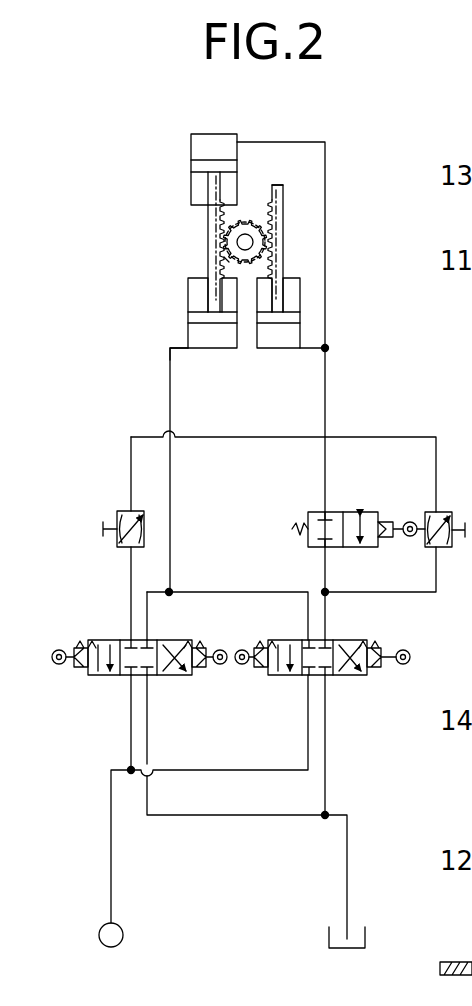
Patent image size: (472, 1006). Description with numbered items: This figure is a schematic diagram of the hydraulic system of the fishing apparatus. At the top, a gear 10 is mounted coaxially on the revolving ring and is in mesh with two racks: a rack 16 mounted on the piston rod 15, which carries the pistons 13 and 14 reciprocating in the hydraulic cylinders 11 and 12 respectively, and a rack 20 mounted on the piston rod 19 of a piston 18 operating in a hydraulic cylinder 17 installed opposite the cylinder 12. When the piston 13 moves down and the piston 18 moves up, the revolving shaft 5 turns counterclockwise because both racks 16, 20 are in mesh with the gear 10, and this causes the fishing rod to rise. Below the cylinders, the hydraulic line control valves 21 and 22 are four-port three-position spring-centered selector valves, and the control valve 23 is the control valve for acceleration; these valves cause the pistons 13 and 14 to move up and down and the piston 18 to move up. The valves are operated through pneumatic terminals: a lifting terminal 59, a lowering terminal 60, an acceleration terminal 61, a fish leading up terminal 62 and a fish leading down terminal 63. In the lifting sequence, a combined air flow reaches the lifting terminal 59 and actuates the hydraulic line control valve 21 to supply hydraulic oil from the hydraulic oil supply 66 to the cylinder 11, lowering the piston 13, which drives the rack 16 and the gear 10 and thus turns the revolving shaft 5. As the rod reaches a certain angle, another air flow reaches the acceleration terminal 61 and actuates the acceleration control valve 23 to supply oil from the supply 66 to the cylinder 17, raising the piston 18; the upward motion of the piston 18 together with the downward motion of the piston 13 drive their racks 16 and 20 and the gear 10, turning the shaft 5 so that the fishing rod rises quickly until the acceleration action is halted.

The revolving shaft 5 is at (252, 242).
The gear 10 is at (245, 222).
The hydraulic cylinder 11 is at (191, 145).
The hydraulic cylinder 12 is at (188, 332).
The piston 13 is at (197, 168).
The piston 14 is at (197, 316).
The piston rod 15 is at (208, 216).
The rack 16 is at (226, 262).
The hydraulic cylinder 17 is at (305, 338).
The piston 18 is at (292, 318).
The piston rod 19 is at (284, 268).
The rack 20 is at (272, 190).
The hydraulic line control valve 21 is at (405, 630).
The hydraulic line control valve 22 is at (118, 634).
The control valve for acceleration 23 is at (408, 485).
The lifting terminal 59 is at (403, 665).
The lowering terminal 60 is at (248, 665).
The acceleration terminal 61 is at (410, 537).
The fish leading up terminal 62 is at (220, 666).
The fish leading down terminal 63 is at (62, 666).
The hydraulic oil supply 66 is at (123, 936).